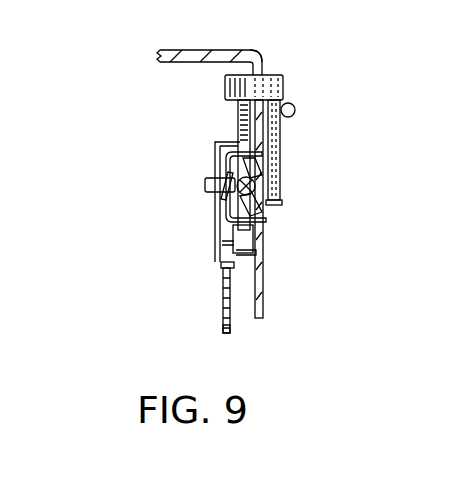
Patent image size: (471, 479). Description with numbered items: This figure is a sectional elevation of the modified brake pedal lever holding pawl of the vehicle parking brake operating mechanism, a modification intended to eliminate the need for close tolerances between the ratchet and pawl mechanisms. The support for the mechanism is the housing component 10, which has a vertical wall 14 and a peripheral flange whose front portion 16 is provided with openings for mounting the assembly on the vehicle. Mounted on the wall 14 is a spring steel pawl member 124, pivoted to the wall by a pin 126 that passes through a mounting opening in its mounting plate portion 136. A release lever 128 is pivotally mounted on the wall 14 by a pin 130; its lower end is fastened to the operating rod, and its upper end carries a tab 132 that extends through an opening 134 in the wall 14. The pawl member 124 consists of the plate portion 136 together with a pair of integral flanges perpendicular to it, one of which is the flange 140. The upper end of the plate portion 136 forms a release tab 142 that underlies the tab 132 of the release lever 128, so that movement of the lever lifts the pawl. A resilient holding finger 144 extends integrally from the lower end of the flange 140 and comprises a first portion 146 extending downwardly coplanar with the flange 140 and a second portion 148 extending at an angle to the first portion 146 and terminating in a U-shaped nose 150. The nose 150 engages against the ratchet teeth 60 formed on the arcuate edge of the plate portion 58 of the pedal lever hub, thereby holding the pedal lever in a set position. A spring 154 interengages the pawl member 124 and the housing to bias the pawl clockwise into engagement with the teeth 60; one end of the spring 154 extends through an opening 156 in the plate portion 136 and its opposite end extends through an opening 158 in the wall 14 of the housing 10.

The housing component 10 is at (268, 321).
The vertical wall 14 is at (266, 297).
The front portion 16 is at (175, 51).
The plate portion 58 is at (223, 318).
The teeth 60 is at (223, 297).
The spring steel pawl member 124 is at (166, 178).
The pin 126 is at (278, 198).
The release lever 128 is at (283, 138).
The pin 130 is at (293, 106).
The tab 132 is at (242, 84).
The opening 134 is at (283, 65).
The mounting plate portion 136 is at (262, 176).
The flange 140 is at (215, 143).
The release tab 142 is at (240, 108).
The resilient holding finger 144 is at (244, 253).
The first portion 146 is at (232, 228).
The second portion 148 is at (228, 252).
The U-shaped nose 150 is at (226, 268).
The spring 154 is at (228, 160).
The opening 156 is at (264, 154).
The opening 158 is at (265, 222).